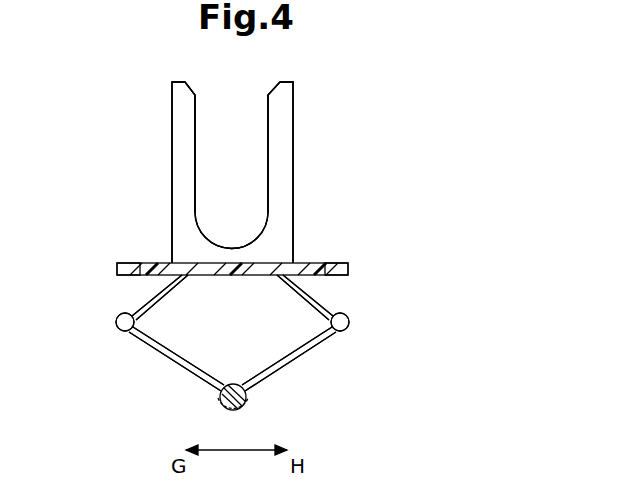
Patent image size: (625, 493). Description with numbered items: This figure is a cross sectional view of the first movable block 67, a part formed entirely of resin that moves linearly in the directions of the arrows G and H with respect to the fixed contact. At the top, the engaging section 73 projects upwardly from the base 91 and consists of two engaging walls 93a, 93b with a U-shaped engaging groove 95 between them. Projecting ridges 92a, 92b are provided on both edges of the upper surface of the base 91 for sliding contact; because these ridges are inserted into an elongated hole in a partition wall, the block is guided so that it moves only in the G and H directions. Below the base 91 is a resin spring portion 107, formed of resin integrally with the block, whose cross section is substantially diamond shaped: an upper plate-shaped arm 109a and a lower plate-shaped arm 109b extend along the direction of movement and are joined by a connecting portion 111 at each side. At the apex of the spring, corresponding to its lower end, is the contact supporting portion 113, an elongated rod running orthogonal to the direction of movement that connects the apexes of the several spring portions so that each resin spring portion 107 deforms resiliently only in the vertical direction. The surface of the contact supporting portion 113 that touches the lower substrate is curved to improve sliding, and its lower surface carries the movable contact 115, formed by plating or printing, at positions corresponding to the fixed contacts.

The first movable block 67 is at (340, 150).
The engaging section 73 is at (172, 152).
The engaging wall 93a is at (173, 82).
The engaging wall 93b is at (293, 82).
The U-shaped engaging groove 95 is at (196, 112).
The base 91 is at (318, 263).
The projecting ridge 92a is at (118, 263).
The projecting ridge 92b is at (344, 262).
The resin spring portion 107 is at (350, 322).
The upper plate-shaped arm 109a is at (141, 299).
The lower plate-shaped arm 109b is at (170, 360).
The connecting portion 111 is at (115, 322).
The contact supporting portion 113 is at (232, 385).
The movable contact 115 is at (246, 406).